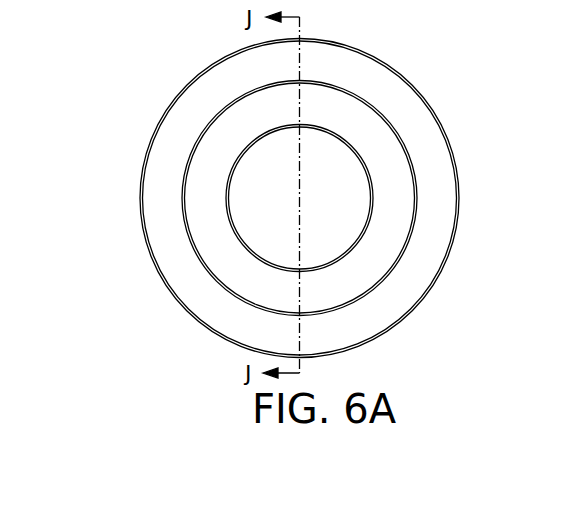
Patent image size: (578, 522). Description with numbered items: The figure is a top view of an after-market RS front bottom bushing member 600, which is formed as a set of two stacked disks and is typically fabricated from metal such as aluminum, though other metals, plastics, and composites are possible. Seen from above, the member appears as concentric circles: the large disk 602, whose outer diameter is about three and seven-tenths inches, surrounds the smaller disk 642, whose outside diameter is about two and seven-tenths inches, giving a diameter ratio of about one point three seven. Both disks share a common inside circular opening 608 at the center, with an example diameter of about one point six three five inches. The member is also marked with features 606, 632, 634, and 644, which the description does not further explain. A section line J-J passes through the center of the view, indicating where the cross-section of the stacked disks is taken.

The RS front bottom bushing member 600 is at (147, 76).
The large disk 602 is at (383, 63).
The inner aperture 606 is at (285, 127).
The circular opening 608 is at (252, 231).
The outer ring region 632 is at (428, 254).
The outer wall 634 is at (419, 305).
The smaller disk 642 is at (402, 140).
The inner ring region 644 is at (397, 193).